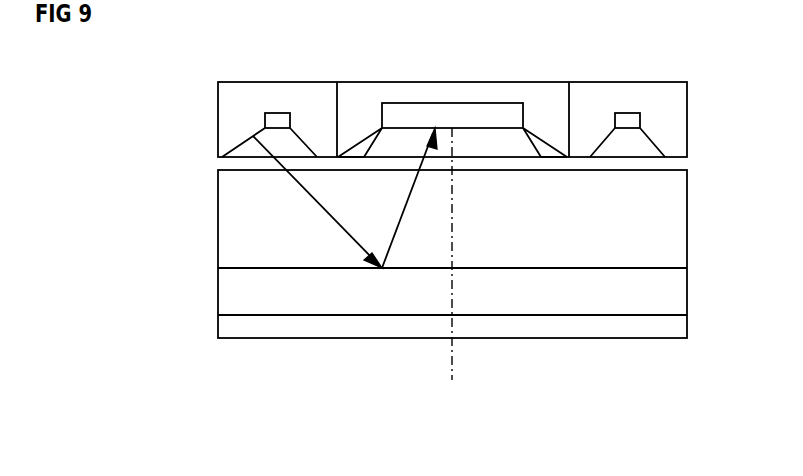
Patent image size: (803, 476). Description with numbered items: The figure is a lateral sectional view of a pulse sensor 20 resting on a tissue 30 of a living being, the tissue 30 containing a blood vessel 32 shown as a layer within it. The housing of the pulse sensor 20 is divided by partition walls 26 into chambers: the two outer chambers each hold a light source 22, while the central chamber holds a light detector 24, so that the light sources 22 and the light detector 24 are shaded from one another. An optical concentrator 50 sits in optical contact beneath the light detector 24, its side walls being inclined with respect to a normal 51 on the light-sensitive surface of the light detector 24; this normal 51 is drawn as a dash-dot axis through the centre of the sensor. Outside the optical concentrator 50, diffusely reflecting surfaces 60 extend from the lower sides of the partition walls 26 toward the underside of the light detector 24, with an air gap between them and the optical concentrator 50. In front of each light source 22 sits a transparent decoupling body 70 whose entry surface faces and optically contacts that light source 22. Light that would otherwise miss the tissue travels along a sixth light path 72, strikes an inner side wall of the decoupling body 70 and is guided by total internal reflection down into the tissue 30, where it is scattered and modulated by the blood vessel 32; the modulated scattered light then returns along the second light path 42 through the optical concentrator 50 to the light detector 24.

The pulse sensor 20 is at (217, 120).
The light source 22 is at (277, 113).
The light detector 24 is at (452, 103).
The partition wall 26 is at (335, 101).
The tissue 30 is at (217, 221).
The blood vessel 32 is at (272, 310).
The second light path 42 is at (397, 227).
The optical concentrator 50 is at (410, 142).
The normal 51 is at (455, 352).
The diffusely reflecting surface 60 is at (366, 140).
The decoupling body 70 is at (243, 148).
The sixth light path 72 is at (308, 199).